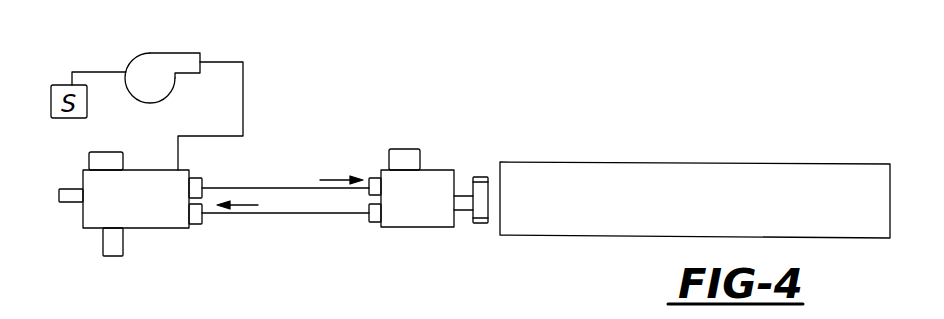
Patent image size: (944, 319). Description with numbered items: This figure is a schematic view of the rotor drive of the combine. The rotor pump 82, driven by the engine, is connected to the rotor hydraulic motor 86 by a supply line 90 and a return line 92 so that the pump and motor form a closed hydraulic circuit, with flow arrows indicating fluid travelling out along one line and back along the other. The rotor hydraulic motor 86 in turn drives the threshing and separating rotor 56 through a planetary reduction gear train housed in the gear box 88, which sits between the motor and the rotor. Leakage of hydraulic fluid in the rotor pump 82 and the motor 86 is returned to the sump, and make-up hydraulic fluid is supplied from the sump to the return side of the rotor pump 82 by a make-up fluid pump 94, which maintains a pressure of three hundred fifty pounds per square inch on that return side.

The threshing and separating rotor 56 is at (672, 162).
The rotor pump 82 is at (83, 216).
The rotor hydraulic motor 86 is at (440, 170).
The gear box 88 is at (483, 223).
The supply line 90 is at (287, 188).
The return line 92 is at (307, 213).
The make-up fluid pump 94 is at (190, 53).